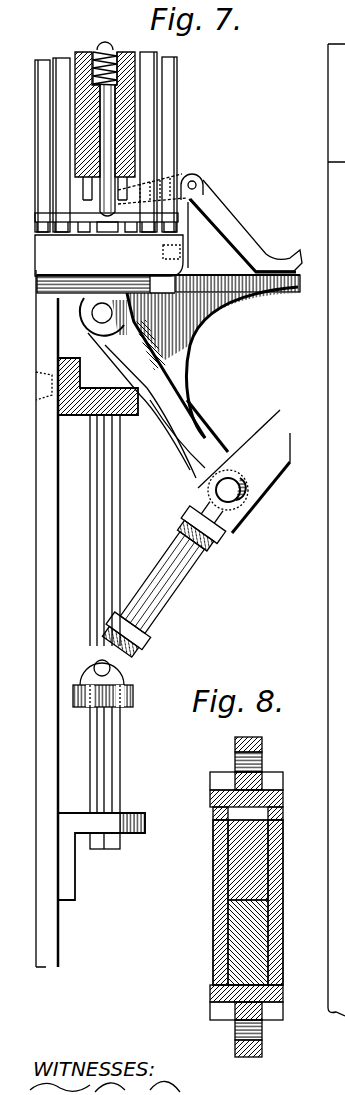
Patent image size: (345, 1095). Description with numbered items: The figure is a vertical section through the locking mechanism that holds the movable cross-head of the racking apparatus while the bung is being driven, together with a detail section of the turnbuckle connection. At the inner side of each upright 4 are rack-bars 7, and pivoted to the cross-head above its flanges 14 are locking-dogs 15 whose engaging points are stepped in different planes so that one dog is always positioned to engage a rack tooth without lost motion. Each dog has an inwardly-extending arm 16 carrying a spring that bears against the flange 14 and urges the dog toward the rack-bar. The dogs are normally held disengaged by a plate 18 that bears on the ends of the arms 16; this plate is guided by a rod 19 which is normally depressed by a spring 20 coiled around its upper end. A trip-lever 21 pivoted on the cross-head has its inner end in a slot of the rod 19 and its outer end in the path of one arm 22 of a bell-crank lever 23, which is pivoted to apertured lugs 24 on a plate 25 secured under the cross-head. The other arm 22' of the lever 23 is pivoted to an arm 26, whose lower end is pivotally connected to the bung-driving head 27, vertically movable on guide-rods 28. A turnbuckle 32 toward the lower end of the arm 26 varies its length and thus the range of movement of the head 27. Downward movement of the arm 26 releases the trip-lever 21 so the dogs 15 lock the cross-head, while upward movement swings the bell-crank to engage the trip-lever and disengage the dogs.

In FIG. 7, the upright 4 is at (326, 572).
In FIG. 7, the rack-bar 7 is at (280, 410).
In FIG. 7, the flange 14 is at (38, 275).
In FIG. 7, the locking-dog 15 is at (145, 130).
In FIG. 7, the inwardly-extending arm 16 is at (78, 232).
In FIG. 7, the plate 18 is at (200, 205).
In FIG. 7, the guide-rod 19 is at (107, 98).
In FIG. 7, the spring 20 is at (90, 50).
In FIG. 7, the trip-lever 21 is at (232, 232).
In FIG. 7, the arm of bell-crank lever 22 is at (212, 362).
In FIG. 7, the other arm of bell-crank lever 22' is at (198, 429).
In FIG. 7, the bell-crank lever 23 is at (159, 405).
In FIG. 7, the apertured lug 24 is at (245, 347).
In FIG. 7, the plate 25 is at (108, 290).
In FIG. 7, the arm 26 is at (266, 472).
In FIG. 7, the head 27 is at (134, 704).
In FIG. 7, the guide-rod 28 is at (120, 766).
In FIG. 7, the turnbuckle 32 is at (195, 582).
In FIG. 8, the turnbuckle 32 is at (264, 897).